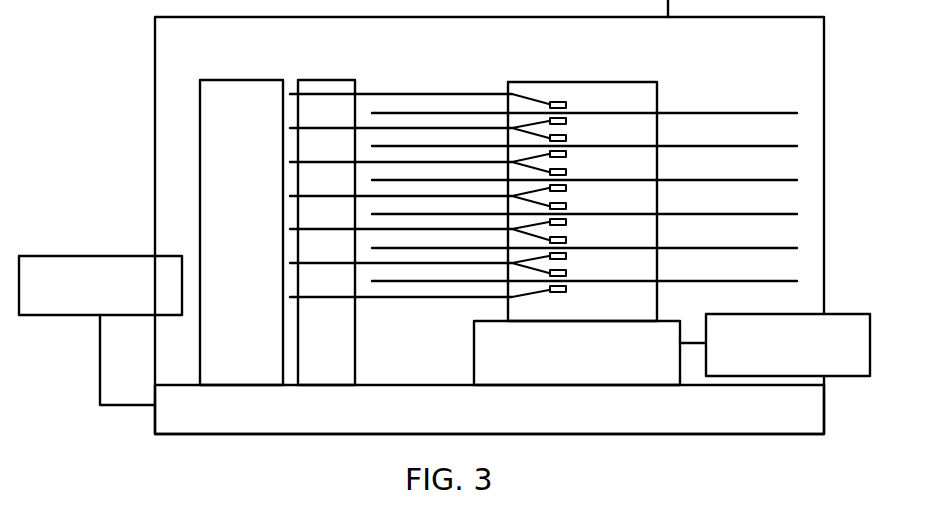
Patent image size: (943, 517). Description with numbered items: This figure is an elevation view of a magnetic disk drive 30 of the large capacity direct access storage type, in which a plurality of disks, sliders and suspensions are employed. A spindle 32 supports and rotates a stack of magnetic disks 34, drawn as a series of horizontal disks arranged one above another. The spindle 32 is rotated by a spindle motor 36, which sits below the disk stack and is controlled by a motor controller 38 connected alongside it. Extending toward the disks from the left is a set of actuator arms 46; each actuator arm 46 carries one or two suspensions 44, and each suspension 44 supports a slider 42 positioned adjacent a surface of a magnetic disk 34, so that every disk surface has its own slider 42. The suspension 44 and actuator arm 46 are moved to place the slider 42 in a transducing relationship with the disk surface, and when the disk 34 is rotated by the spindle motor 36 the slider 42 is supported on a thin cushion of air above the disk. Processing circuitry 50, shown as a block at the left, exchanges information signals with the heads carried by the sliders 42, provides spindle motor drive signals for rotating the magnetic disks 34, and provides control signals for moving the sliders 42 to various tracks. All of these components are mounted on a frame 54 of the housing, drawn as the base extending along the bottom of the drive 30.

The magnetic disk drive 30 is at (716, 79).
The spindle 32 is at (636, 82).
The magnetic disk 34 is at (773, 114).
The spindle motor 36 is at (599, 369).
The motor controller 38 is at (858, 376).
The slider 42 is at (562, 134).
The suspension 44 is at (527, 131).
The actuator arm 46 is at (460, 128).
The processing circuitry 50 is at (80, 256).
The frame 54 is at (276, 434).